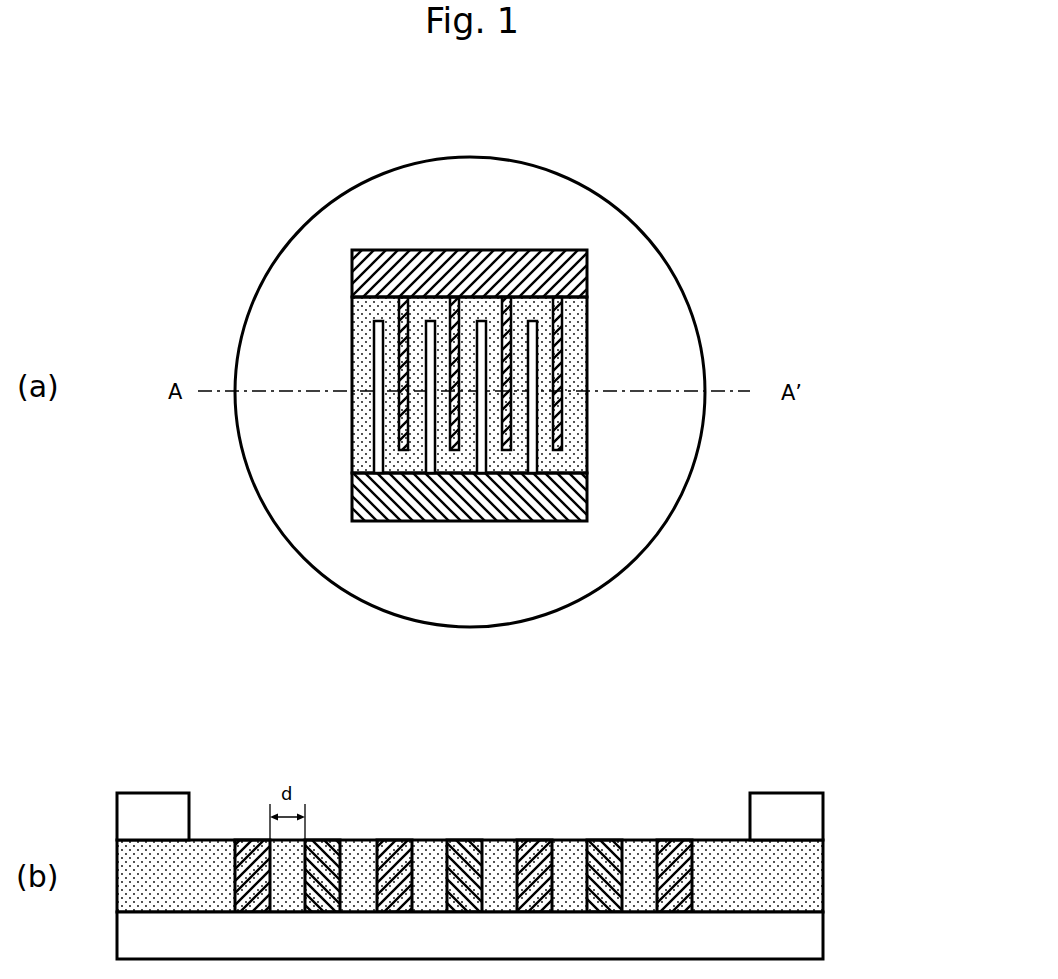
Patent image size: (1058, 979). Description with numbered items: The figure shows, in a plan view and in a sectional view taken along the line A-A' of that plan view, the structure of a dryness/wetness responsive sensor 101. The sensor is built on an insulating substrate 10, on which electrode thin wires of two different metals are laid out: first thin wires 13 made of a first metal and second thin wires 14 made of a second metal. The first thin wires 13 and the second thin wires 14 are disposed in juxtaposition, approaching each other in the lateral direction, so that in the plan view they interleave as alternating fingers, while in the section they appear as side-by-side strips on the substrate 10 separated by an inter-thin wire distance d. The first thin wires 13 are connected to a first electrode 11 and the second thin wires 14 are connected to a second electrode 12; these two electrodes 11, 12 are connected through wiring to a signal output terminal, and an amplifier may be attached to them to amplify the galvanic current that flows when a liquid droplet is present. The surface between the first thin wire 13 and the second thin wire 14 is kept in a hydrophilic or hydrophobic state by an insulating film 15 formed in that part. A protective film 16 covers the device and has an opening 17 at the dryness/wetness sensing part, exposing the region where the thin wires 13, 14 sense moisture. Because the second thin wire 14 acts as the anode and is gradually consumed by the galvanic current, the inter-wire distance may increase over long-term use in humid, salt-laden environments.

The dryness/wetness responsive sensor 101 is at (652, 168).
The insulating substrate 10 is at (809, 933).
The first electrode 11 is at (588, 270).
The second electrode 12 is at (575, 498).
The first thin wire 13 is at (588, 330).
The second thin wire 14 is at (575, 467).
The insulating film 15 is at (575, 417).
The protective film 16 is at (670, 345).
The opening 17 is at (473, 797).